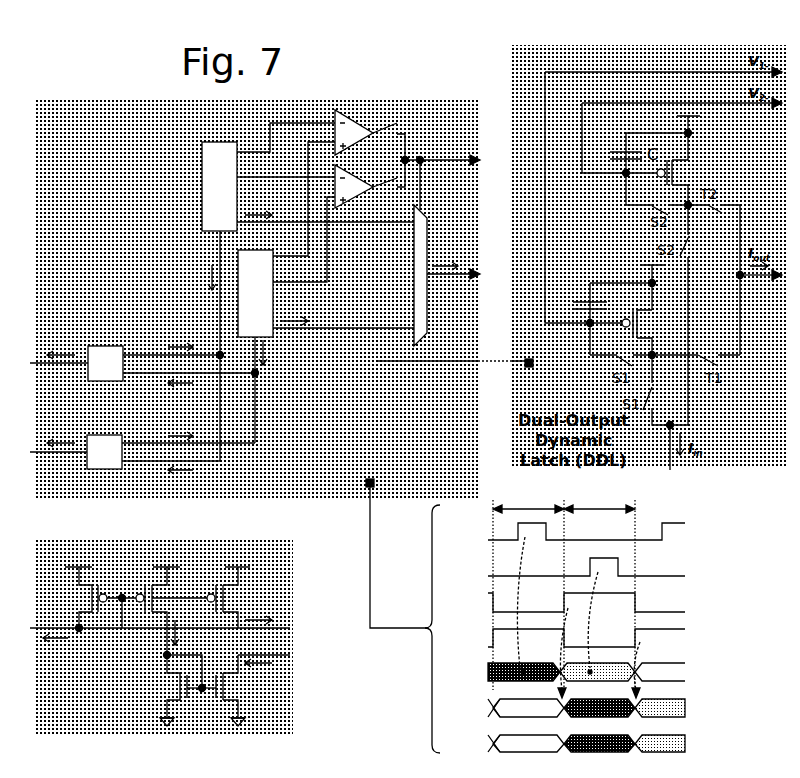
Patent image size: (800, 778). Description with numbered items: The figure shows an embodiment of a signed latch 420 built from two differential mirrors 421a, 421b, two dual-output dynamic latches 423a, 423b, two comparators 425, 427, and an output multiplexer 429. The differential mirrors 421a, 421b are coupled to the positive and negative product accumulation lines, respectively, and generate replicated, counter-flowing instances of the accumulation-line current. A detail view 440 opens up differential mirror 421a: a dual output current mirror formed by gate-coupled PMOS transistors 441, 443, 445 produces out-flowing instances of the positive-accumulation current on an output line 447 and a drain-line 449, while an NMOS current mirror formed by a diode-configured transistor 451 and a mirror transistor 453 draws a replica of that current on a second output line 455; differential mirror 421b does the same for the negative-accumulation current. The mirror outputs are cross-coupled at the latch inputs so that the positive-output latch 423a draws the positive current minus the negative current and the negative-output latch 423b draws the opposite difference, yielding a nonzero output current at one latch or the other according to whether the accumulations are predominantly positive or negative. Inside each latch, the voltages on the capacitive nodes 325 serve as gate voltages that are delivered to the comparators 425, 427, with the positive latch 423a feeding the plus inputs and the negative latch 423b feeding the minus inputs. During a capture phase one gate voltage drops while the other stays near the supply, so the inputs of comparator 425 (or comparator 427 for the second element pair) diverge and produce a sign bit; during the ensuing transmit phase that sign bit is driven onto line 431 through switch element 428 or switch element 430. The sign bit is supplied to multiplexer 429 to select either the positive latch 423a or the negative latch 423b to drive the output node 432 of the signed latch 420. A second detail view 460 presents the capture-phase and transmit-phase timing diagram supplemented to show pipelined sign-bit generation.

The signed latch 420 is at (255, 298).
The differential mirror 421a is at (87, 469).
The differential mirror 421b is at (88, 381).
The dual-output dynamic latch 423a is at (202, 228).
The dual-output dynamic latch 423b is at (274, 338).
The comparator 425 is at (333, 119).
The comparator 427 is at (345, 169).
The switch element 428 is at (398, 131).
The switch element 430 is at (389, 173).
The output multiplexer 429 is at (414, 255).
The line 431 is at (432, 164).
The Iout node 432 is at (432, 281).
The detail view 440 is at (105, 469).
The PMOS transistor 441 is at (99, 597).
The PMOS transistor 443 is at (167, 589).
The PMOS transistor 445 is at (240, 589).
The output line 447 is at (238, 659).
The drain-line 449 is at (166, 642).
The diode-configured transistor 451 is at (167, 690).
The mirror transistor 453 is at (240, 700).
The output line 455 is at (249, 657).
The capacitive node 325 is at (580, 298).
The detail view 460 is at (716, 637).